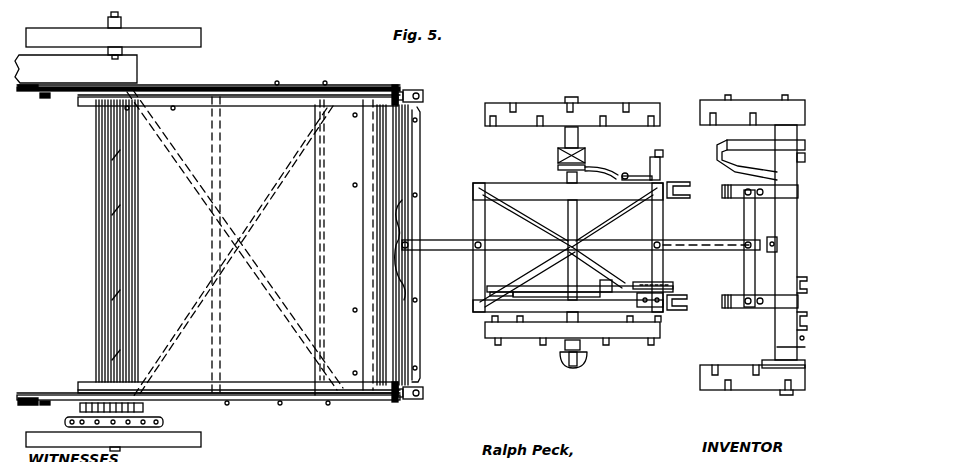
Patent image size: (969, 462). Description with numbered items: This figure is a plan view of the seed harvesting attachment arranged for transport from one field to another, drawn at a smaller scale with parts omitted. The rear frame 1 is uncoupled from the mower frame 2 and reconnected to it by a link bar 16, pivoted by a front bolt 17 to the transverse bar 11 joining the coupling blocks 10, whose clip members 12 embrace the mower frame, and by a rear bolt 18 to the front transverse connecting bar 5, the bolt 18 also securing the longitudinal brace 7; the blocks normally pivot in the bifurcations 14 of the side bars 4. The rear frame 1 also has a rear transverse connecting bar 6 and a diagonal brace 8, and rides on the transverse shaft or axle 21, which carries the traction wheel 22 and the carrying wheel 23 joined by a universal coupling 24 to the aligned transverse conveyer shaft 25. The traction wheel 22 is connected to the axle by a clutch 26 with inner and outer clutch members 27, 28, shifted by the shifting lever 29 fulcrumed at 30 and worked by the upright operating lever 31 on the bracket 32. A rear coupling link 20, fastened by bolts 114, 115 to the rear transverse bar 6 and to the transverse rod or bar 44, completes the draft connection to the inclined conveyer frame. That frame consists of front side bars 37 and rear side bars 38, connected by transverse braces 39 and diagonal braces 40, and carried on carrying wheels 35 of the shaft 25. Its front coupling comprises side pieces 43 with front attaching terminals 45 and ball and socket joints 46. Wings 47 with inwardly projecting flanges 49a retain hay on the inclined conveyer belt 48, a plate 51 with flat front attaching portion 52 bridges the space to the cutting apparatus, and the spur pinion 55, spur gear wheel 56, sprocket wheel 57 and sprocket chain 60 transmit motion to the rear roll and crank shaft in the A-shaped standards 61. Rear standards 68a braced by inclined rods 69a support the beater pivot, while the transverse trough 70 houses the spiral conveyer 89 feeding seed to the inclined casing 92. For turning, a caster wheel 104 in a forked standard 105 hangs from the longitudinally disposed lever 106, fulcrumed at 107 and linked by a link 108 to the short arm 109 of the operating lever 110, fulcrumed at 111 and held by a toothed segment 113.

The rear frame 1 is at (471, 203).
The mower frame 2 is at (755, 245).
The side bars 4 is at (522, 190).
The front transverse connecting bar 5 is at (660, 212).
The rear transverse connecting bar 6 is at (474, 270).
The longitudinal brace 7 is at (540, 232).
The diagonal brace 8 is at (608, 228).
The coupling blocks 10 is at (730, 188).
The transverse bar 11 is at (745, 268).
The clip members 12 is at (640, 293).
The bifurcations 14 is at (678, 190).
The link bar 16 is at (665, 278).
The front bolt 17 is at (746, 242).
The rear bolt 18 is at (655, 242).
The rear coupling link 20 is at (440, 234).
The transverse shaft or axle 21 is at (566, 205).
The traction wheel 22 is at (585, 104).
The carrying wheel 23 is at (520, 338).
The universal coupling 24 is at (588, 364).
The transverse conveyer shaft 25 is at (124, 51).
The clutch 26 is at (562, 152).
The inner clutch member 27 is at (560, 167).
The outer clutch member 28 is at (584, 155).
The shifting lever 29 is at (601, 163).
The fulcrum 30 is at (627, 173).
The upright operating lever 31 is at (654, 157).
The bracket 32 is at (662, 153).
The carrying wheels 35 is at (74, 24).
The front side bars 37 is at (356, 92).
The rear side bars 38 is at (165, 90).
The transverse braces 39 is at (222, 140).
The diagonal braces 40 is at (250, 206).
The side pieces 43 is at (420, 90).
The transverse rod or bar 44 is at (404, 270).
The front attaching terminals 45 is at (424, 96).
The ball and socket joints 46 is at (394, 86).
The wings 47 is at (250, 102).
The inclined conveyer belt 48 is at (130, 241).
The inwardly projecting flanges 49a is at (296, 386).
The plate 51 is at (390, 338).
The flat front attaching portion 52 is at (412, 358).
The spur pinion 55 is at (148, 395).
The spur gear wheel 56 is at (80, 408).
The sprocket wheel 57 is at (140, 425).
The sprocket chain 60 is at (170, 427).
The A-shaped standards 61 is at (60, 95).
The rear standards 68a is at (30, 86).
The inclined rods 69a is at (128, 96).
The transverse trough 70 is at (101, 210).
The spiral conveyer 89 is at (120, 158).
The inclined casing 92 is at (76, 69).
The caster wheel 104 is at (492, 290).
The forked standard 105 is at (520, 280).
The longitudinally disposed lever 106 is at (543, 286).
The fulcrum 107 is at (560, 294).
The link 108 is at (606, 292).
The short arm 109 is at (618, 278).
The operating lever 110 is at (674, 285).
The fulcrum 111 is at (638, 292).
The toothed segment 113 is at (655, 300).
The bolt 114 is at (486, 243).
The bolt 115 is at (416, 243).